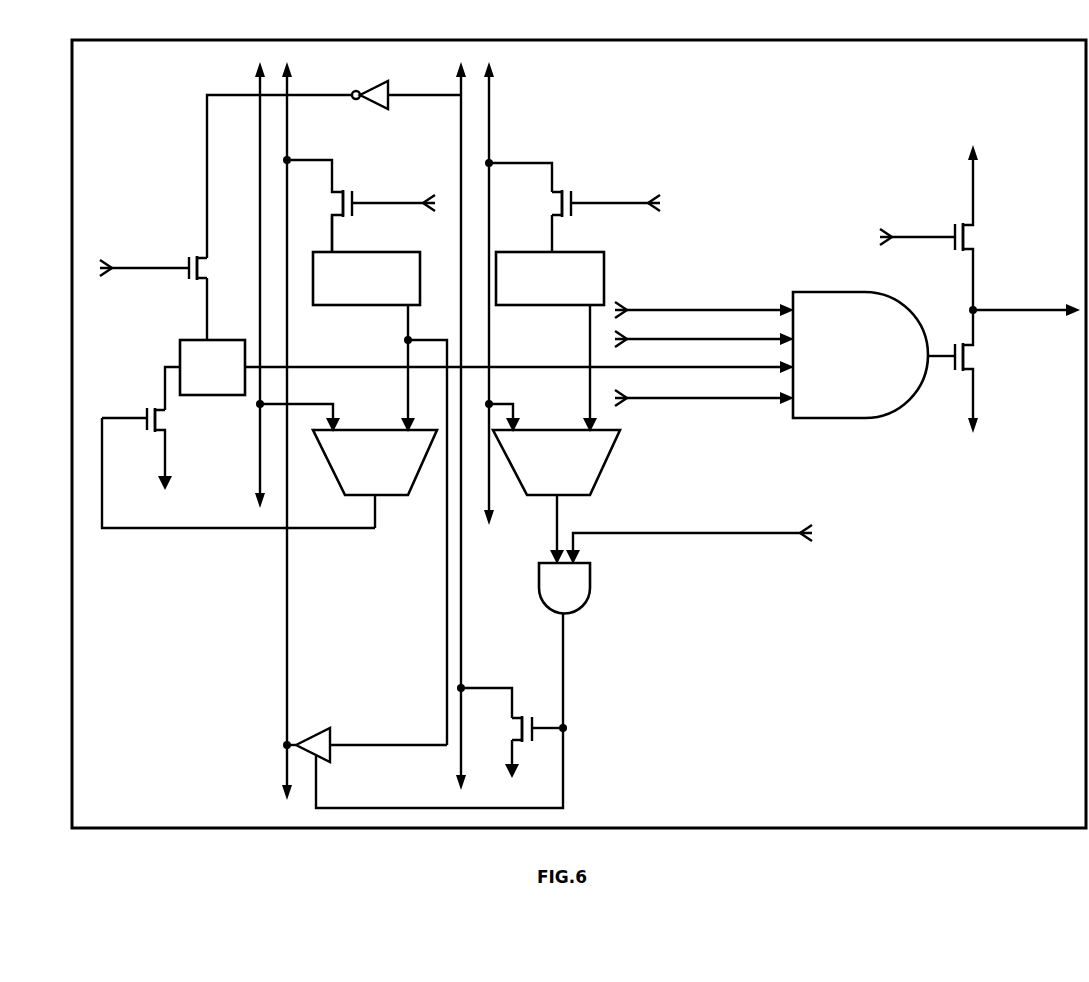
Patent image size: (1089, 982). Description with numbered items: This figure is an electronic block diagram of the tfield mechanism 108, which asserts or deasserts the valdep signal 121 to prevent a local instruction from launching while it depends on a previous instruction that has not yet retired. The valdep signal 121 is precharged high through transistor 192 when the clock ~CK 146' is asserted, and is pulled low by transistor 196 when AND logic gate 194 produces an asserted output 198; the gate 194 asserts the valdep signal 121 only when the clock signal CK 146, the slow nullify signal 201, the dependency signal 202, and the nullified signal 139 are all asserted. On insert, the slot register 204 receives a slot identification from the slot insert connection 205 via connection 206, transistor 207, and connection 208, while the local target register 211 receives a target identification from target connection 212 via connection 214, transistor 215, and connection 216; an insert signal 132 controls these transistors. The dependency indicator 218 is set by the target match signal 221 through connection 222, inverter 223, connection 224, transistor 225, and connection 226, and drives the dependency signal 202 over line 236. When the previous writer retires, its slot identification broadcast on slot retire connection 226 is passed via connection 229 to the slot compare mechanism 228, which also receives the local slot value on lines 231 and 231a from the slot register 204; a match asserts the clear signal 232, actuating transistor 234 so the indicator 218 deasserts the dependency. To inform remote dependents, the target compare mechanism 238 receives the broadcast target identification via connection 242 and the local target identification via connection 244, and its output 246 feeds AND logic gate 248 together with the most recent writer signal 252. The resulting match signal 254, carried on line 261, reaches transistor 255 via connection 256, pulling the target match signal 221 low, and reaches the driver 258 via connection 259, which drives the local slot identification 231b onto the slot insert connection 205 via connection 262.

The tfield mechanism 108 is at (727, 40).
The slot retire connection 226 is at (257, 82).
The slot insert connection 205 is at (290, 92).
The connection 222 is at (390, 82).
The inverter 223 is at (356, 100).
The target match signal 221 is at (460, 126).
The target connection 212 is at (496, 100).
The connection 224 is at (206, 170).
The transistor 207 is at (322, 198).
The connection 206 is at (318, 156).
The insert signal 132 is at (140, 272).
The transistor 225 is at (205, 266).
The connection 208 is at (333, 236).
The connection 214 is at (542, 160).
The transistor 215 is at (540, 205).
The connection 216 is at (554, 238).
The slot register 204 is at (366, 278).
The local target register 211 is at (550, 278).
The slot register output line 231 is at (406, 340).
The slot register output branch 231a is at (406, 392).
The connection 229 is at (297, 404).
The slot compare mechanism 228 is at (375, 479).
The connection 242 is at (500, 405).
The connection 244 is at (588, 394).
The target compare mechanism 238 is at (556, 462).
The output 246 is at (547, 529).
The dependency indicator 218 is at (226, 396).
The connection line 236 is at (163, 387).
The transistor 234 is at (182, 420).
The clear signal 232 is at (160, 529).
The dependency signal 202 is at (628, 367).
The slow nullify signal 201 is at (618, 310).
The clock signal 146 is at (704, 331).
The nullified signal 139 is at (719, 400).
The AND logic gate 194 is at (860, 355).
The output 198 is at (934, 365).
The transistor 192 is at (990, 237).
The inverted clock signal line 146' is at (916, 249).
The valdep signal 121 is at (1017, 317).
The transistor 196 is at (990, 360).
The most recent writer signal 252 is at (733, 536).
The AND logic gate 248 is at (592, 595).
The connection line 261 is at (478, 686).
The match signal 254 is at (565, 670).
The transistor 255 is at (500, 732).
The connection 256 is at (541, 740).
The connection 259 is at (563, 774).
The driver 258 is at (310, 736).
The connection 262 is at (291, 740).
The local slot identification 231b is at (375, 746).